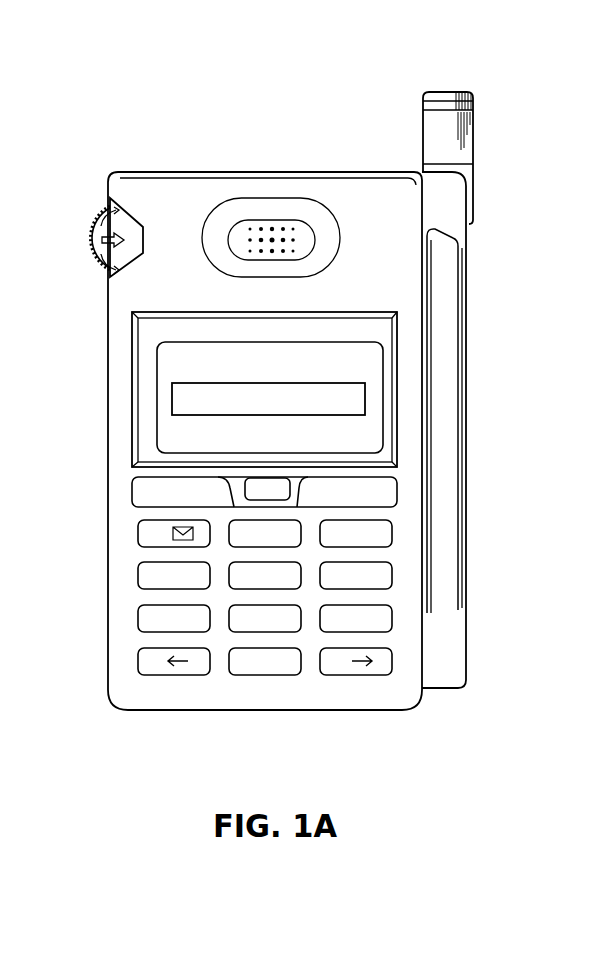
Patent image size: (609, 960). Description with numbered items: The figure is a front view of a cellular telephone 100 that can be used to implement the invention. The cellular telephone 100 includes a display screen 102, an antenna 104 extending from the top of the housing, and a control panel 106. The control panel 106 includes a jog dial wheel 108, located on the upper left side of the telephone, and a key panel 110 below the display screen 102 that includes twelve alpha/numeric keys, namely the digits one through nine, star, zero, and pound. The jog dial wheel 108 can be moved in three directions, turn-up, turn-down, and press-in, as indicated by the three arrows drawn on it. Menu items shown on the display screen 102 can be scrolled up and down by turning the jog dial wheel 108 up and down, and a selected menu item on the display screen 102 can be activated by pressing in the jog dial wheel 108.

The cellular telephone 100 is at (160, 105).
The display screen 102 is at (157, 398).
The antenna 104 is at (473, 130).
The control panel 106 is at (152, 288).
The jog dial wheel 108 is at (95, 253).
The key panel 110 is at (410, 516).